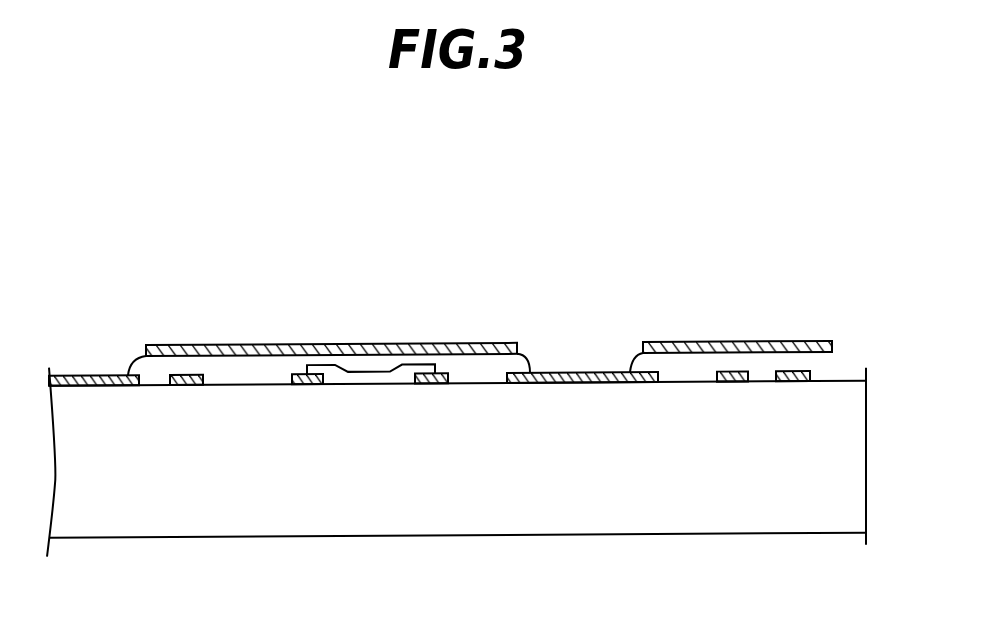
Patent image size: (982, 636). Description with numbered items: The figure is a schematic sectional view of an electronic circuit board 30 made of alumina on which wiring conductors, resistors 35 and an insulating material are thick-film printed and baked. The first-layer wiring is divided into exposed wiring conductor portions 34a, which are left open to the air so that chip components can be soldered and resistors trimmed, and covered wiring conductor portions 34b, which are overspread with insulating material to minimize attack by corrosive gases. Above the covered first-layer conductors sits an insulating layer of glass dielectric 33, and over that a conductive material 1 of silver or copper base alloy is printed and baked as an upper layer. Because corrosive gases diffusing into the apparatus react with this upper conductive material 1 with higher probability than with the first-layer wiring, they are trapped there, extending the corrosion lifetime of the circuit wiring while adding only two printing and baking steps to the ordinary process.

The conductive material 1 is at (448, 345).
The electronic circuit board 30 is at (533, 497).
The glass dielectric insulating layer 33 is at (257, 386).
The exposed wiring conductor portions 34a is at (186, 386).
The covered wiring conductor portions 34b is at (104, 375).
The resistor 35 is at (387, 377).